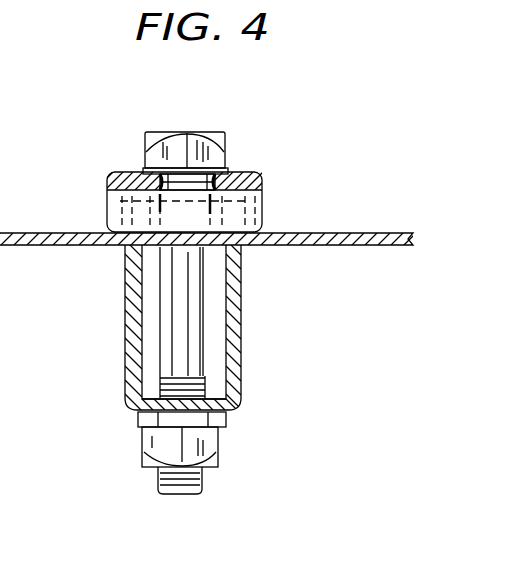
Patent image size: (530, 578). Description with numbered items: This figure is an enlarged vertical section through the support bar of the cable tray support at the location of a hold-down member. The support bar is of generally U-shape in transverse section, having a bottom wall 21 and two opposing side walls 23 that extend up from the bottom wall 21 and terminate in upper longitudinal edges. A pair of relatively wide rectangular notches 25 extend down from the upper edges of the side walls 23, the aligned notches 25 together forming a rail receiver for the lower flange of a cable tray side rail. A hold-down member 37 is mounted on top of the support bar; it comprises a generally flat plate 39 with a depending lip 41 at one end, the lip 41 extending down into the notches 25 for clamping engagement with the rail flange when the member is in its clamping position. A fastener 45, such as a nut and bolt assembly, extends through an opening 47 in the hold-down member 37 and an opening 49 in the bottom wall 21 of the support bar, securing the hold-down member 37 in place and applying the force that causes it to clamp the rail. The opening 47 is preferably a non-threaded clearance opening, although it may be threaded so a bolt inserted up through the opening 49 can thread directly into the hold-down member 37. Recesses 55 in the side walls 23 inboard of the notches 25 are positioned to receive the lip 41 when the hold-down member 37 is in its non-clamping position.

The bottom wall 21 is at (230, 400).
The side wall 23 is at (127, 332).
The notch 25 is at (108, 246).
The hold-down member 37 is at (272, 172).
The flat plate 39 is at (122, 172).
The depending lip 41 is at (264, 210).
The fastener 45 is at (190, 132).
The opening in hold-down member 47 is at (162, 167).
The opening in bottom wall 49 is at (127, 413).
The recess 55 is at (13, 430).